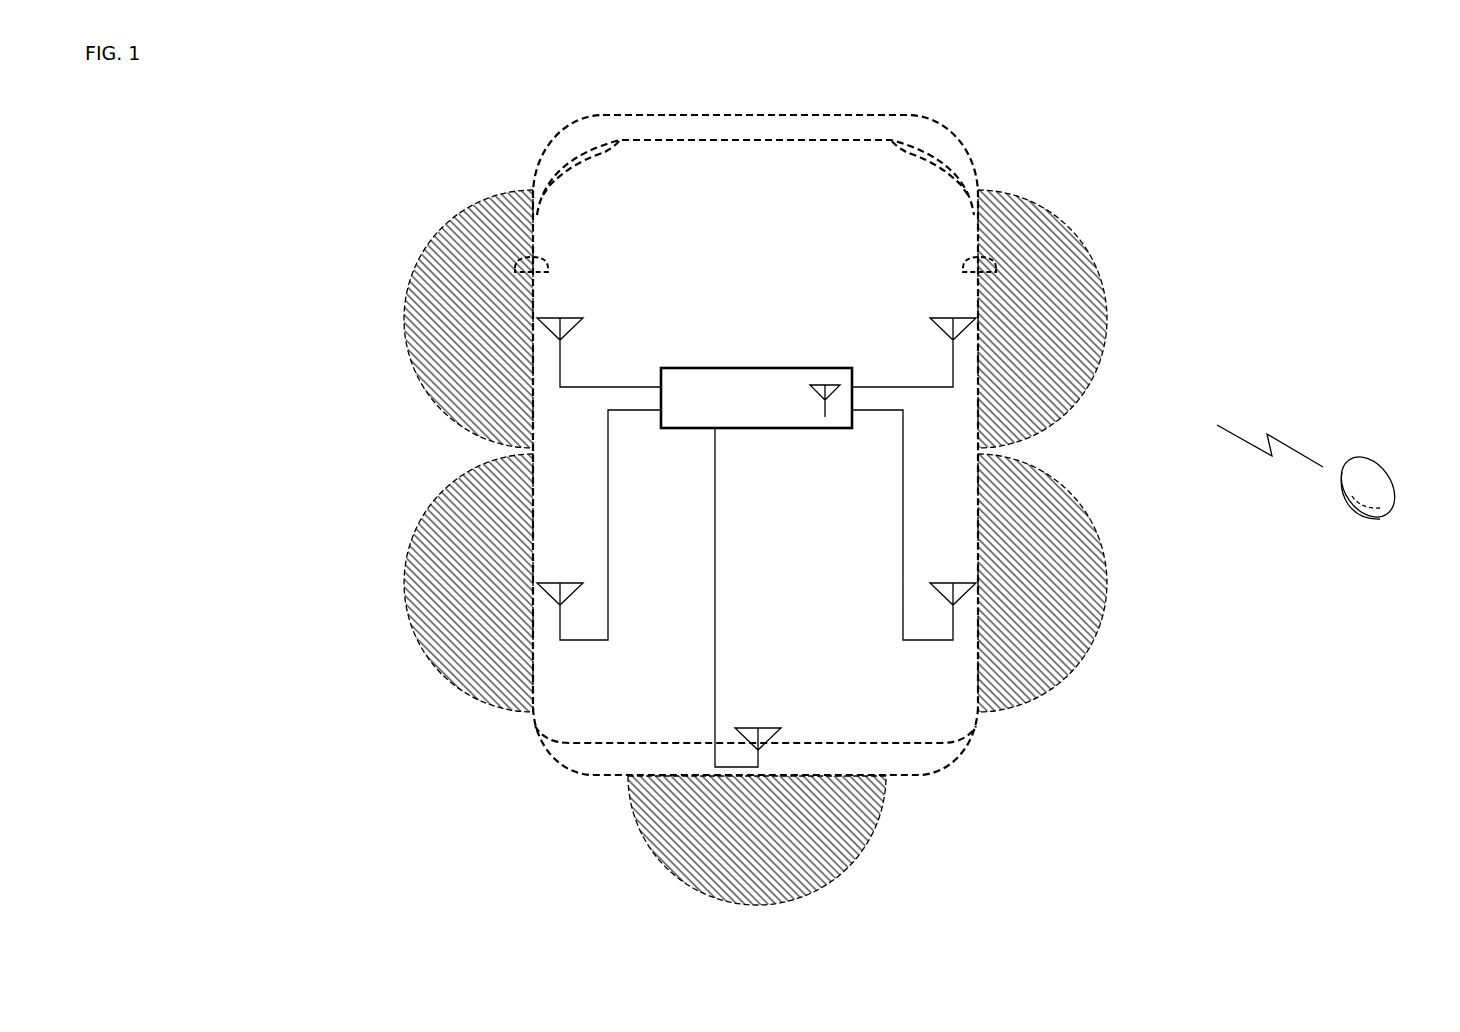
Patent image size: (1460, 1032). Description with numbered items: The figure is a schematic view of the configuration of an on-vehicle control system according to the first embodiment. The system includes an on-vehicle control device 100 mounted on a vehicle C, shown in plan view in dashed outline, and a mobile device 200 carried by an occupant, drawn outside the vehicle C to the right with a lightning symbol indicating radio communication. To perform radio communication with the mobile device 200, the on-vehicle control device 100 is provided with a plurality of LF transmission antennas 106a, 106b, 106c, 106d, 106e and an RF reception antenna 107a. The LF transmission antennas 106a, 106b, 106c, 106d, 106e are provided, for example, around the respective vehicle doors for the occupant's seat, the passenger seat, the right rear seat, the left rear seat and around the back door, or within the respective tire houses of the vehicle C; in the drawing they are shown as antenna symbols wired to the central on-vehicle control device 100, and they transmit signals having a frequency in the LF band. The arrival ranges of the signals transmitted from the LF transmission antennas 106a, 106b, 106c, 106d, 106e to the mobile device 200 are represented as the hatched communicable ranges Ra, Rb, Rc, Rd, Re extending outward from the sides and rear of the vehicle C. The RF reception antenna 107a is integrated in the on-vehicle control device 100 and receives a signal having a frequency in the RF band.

The vehicle C is at (988, 154).
The on-vehicle control device 100 is at (776, 430).
The LF transmission antenna 106a is at (944, 316).
The LF transmission antenna 106b is at (567, 316).
The LF transmission antenna 106c is at (958, 581).
The LF transmission antenna 106d is at (553, 581).
The LF transmission antenna 106e is at (751, 727).
The RF reception antenna 107a is at (826, 384).
The mobile device 200 is at (1420, 462).
The communicable range Ra is at (1071, 226).
The communicable range Rb is at (442, 226).
The communicable range Rc is at (1071, 490).
The communicable range Rd is at (442, 490).
The communicable range Re is at (874, 842).